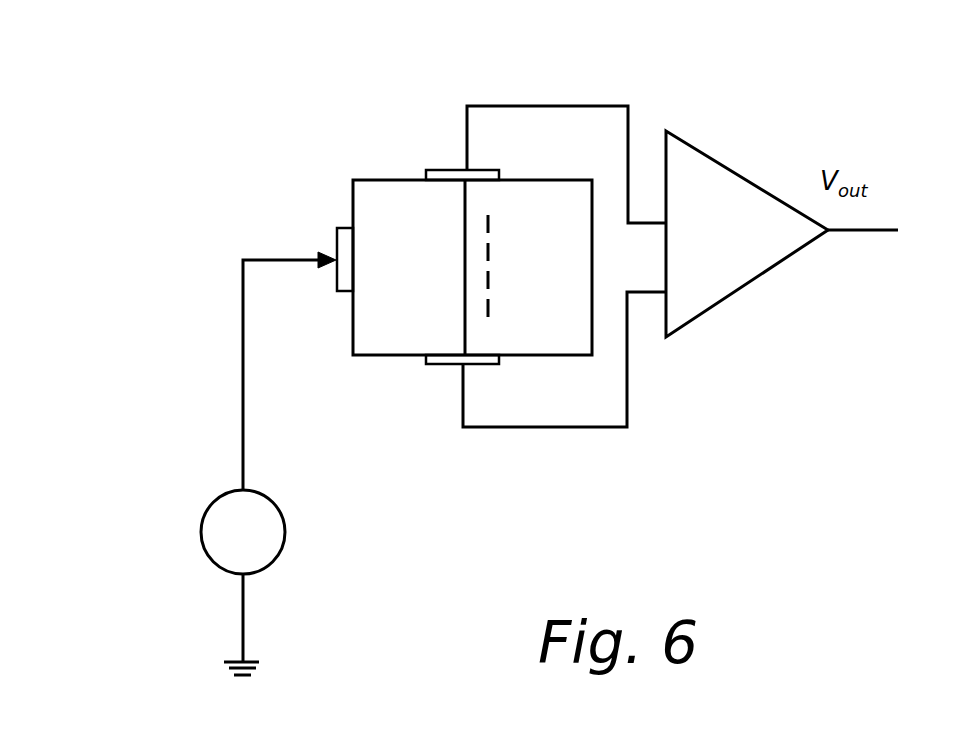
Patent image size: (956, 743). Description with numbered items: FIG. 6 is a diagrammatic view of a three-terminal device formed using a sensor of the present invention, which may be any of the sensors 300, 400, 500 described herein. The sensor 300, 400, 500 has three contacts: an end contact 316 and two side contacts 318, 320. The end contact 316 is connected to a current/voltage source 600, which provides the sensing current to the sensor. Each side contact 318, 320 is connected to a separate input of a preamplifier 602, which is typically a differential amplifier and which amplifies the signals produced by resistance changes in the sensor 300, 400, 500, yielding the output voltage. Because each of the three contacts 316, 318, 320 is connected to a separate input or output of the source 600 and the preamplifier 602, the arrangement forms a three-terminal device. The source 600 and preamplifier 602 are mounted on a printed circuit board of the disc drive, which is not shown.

The sensor 300 is at (316, 141).
The sensor 400 is at (472, 267).
The sensor 500 is at (472, 267).
The end contact 316 is at (342, 272).
The side contact 318 is at (483, 178).
The side contact 320 is at (449, 365).
The preamplifier 602 is at (733, 246).
The current/voltage source 600 is at (270, 546).